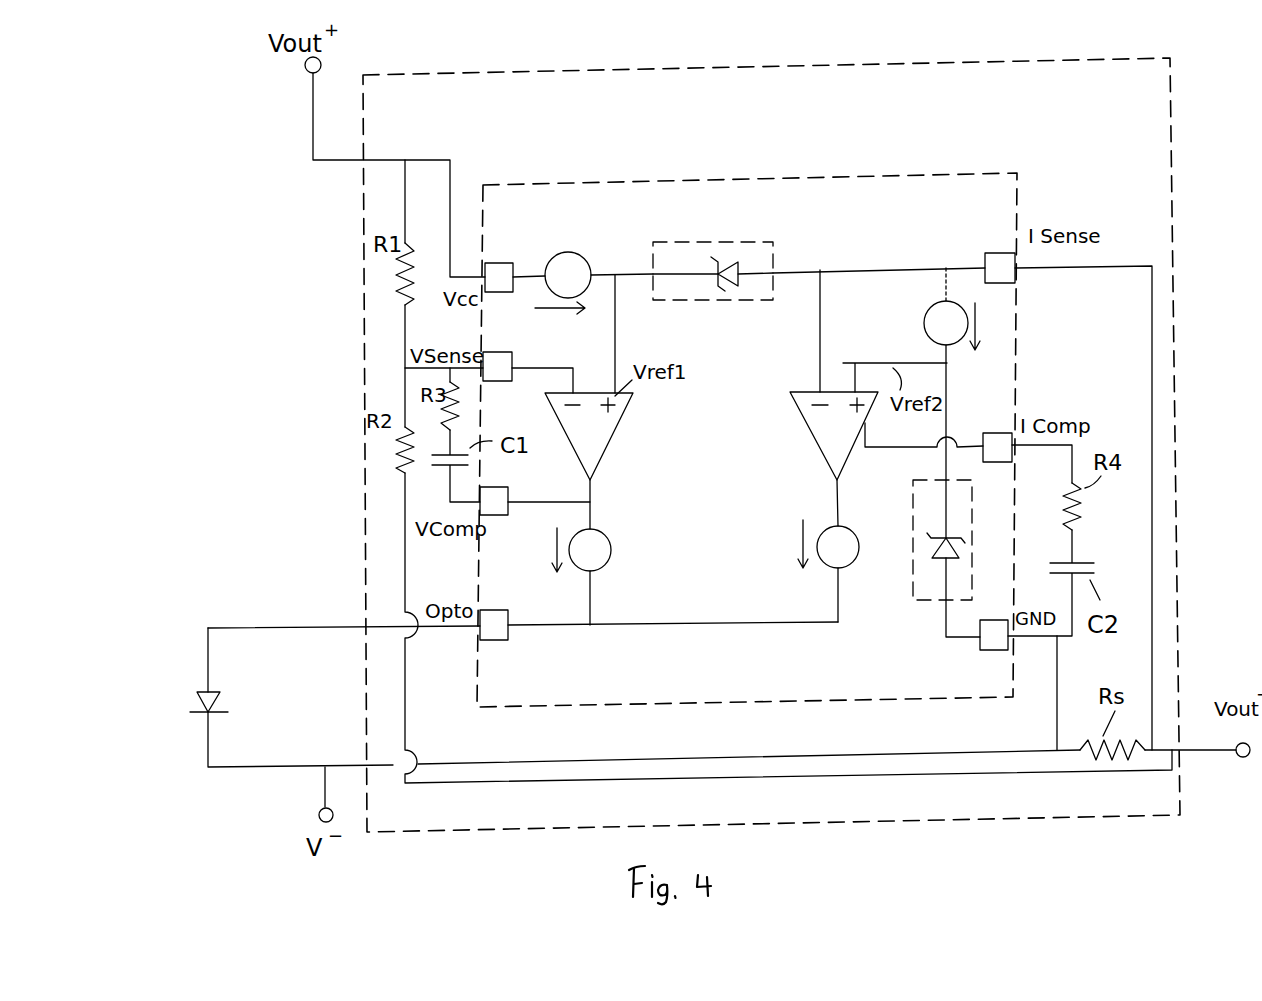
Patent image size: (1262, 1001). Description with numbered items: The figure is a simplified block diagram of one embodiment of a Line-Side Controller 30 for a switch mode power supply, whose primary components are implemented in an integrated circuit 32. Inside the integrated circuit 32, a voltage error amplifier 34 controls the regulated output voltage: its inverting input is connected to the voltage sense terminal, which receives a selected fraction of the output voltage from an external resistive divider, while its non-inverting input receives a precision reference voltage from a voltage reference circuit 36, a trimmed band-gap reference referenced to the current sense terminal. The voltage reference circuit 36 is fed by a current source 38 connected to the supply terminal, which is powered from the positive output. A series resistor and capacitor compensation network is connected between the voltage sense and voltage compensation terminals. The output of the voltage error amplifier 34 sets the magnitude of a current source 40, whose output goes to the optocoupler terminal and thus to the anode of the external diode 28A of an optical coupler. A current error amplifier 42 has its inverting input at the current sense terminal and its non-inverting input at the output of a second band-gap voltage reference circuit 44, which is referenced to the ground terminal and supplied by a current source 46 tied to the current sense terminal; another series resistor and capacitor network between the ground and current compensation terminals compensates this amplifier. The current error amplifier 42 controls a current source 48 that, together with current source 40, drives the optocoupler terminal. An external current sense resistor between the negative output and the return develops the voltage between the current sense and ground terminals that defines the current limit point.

The external diode 28A is at (182, 694).
The Line-Side Controller 30 is at (345, 290).
The integrated circuit 32 is at (690, 178).
The voltage error amplifier 34 is at (612, 440).
The voltage reference circuit 36 is at (745, 249).
The current source 38 is at (560, 248).
The current source 40 is at (612, 545).
The current error amplifier 42 is at (810, 438).
The band-gap voltage reference circuit 44 is at (910, 576).
The current source 46 is at (935, 325).
The current source 48 is at (853, 529).